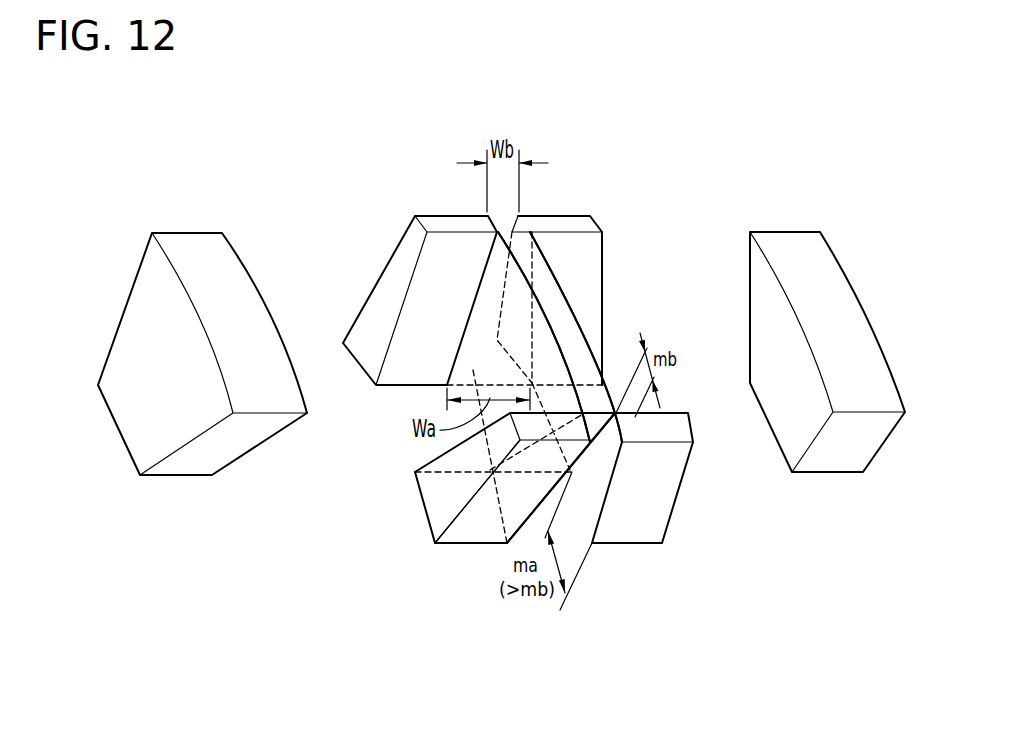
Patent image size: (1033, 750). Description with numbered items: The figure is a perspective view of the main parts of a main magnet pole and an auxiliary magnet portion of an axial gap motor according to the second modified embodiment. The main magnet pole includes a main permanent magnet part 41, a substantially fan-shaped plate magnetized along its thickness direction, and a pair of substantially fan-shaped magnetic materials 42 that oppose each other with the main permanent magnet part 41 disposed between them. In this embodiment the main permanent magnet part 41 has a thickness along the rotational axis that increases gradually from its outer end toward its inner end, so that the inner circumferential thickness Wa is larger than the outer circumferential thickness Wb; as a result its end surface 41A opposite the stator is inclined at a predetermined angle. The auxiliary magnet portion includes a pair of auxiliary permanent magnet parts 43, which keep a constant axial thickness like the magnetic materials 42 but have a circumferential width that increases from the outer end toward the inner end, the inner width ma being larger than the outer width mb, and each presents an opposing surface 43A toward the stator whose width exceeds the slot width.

The main permanent magnet part 41 is at (585, 322).
The surface opposite the stator 41A is at (548, 349).
The magnetic material 42 is at (187, 292).
The auxiliary permanent magnet part 43 is at (442, 223).
The opposing surface 43A is at (598, 468).